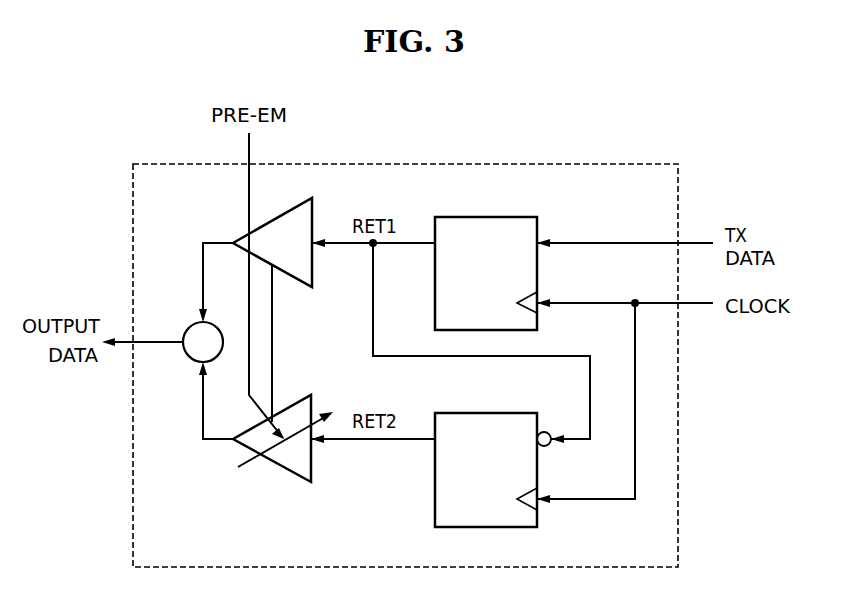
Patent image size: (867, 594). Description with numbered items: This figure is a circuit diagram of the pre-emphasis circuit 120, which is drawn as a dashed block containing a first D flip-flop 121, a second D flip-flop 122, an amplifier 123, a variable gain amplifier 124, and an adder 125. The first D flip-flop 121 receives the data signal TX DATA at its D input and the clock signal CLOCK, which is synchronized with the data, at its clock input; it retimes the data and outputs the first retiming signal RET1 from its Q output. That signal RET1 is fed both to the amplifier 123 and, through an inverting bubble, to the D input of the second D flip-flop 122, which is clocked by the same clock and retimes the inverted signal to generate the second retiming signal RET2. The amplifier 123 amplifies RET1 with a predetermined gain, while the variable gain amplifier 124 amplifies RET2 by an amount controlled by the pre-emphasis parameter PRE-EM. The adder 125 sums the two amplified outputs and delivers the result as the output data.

The pre-emphasis circuit 120 is at (485, 163).
The first D flip-flop 121 is at (488, 215).
The second D flip-flop 122 is at (488, 413).
The amplifier 123 is at (313, 213).
The variable gain amplifier 124 is at (313, 408).
The adder 125 is at (185, 325).